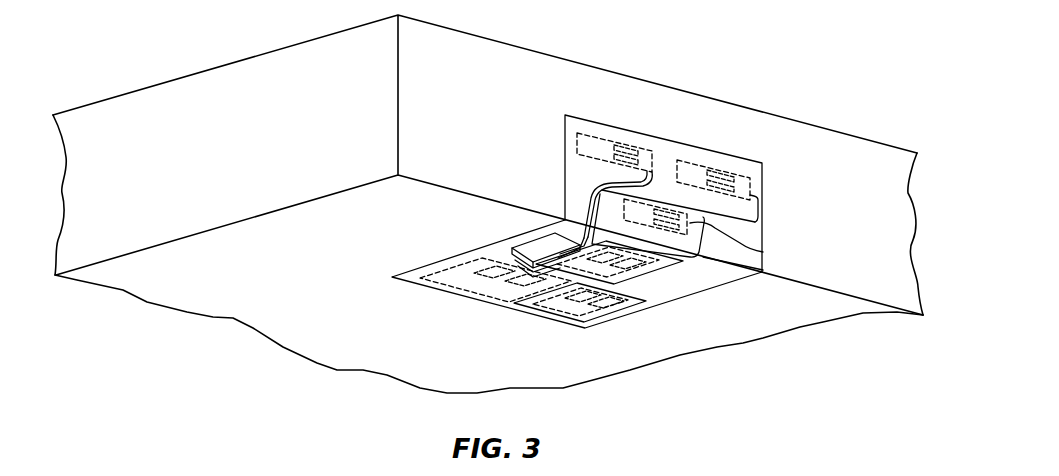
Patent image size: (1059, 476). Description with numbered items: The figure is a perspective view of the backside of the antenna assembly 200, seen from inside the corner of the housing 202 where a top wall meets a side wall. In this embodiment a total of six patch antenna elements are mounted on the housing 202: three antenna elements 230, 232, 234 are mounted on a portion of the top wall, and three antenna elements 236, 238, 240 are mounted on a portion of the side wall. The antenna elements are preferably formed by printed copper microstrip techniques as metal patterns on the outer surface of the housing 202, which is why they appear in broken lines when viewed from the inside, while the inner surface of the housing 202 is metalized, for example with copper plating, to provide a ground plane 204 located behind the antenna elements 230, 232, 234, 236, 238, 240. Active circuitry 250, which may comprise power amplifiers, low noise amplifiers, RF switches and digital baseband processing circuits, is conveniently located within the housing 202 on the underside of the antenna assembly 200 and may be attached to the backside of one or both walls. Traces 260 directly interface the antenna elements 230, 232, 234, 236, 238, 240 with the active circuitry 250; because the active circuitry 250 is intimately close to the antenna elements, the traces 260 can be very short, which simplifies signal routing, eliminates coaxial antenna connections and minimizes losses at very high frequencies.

The antenna assembly 200 is at (428, 300).
The housing 202 is at (493, 40).
The ground plane 204 is at (578, 116).
The antenna element 230 is at (438, 277).
The antenna element 232 is at (553, 300).
The antenna element 234 is at (687, 263).
The antenna element 236 is at (763, 257).
The antenna element 238 is at (602, 132).
The antenna element 240 is at (695, 160).
The active circuitry 250 is at (527, 245).
The traces 260 is at (585, 190).